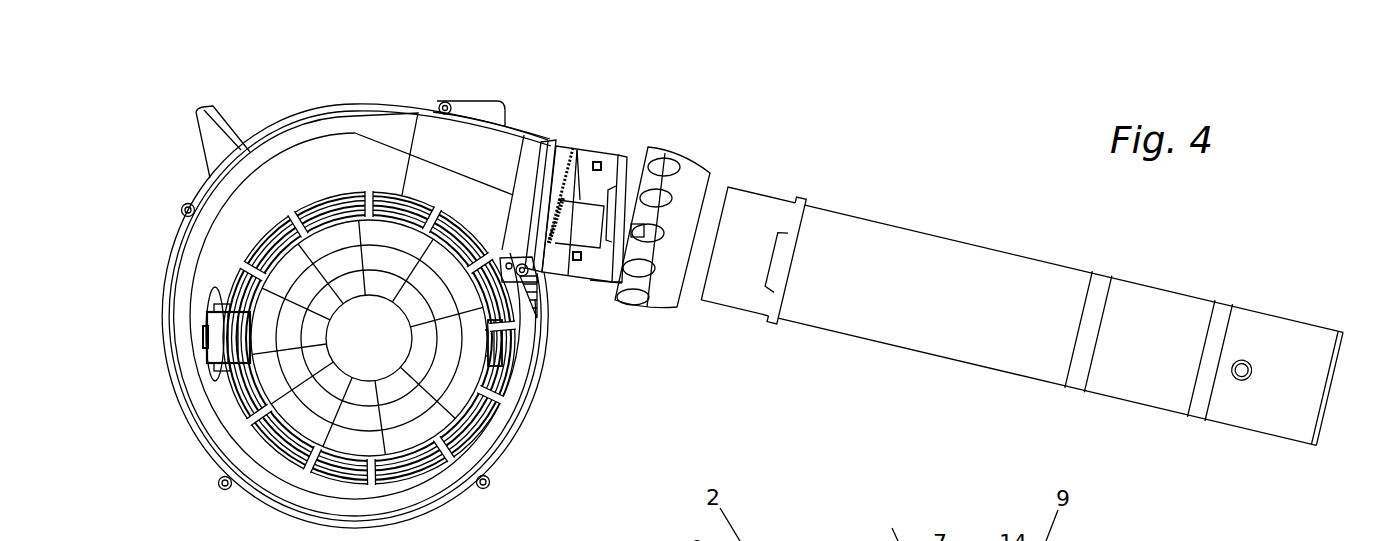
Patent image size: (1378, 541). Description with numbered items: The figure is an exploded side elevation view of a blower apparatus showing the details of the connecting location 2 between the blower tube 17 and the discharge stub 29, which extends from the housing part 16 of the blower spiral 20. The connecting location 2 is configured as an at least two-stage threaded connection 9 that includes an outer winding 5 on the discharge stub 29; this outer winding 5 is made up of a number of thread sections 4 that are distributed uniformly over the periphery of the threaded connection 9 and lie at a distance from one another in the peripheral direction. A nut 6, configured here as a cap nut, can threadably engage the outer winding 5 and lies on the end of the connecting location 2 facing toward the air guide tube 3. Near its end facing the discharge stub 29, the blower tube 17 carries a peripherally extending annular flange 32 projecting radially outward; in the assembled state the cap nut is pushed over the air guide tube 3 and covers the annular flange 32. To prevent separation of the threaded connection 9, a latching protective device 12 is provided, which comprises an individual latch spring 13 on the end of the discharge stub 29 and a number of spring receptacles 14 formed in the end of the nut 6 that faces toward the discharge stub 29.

The connecting location 2 is at (640, 145).
The air guide tube 3 is at (1072, 275).
The thread sections 4 is at (598, 162).
The outer winding 5 is at (597, 148).
The nut 6 is at (720, 228).
The threaded connection 9 is at (608, 287).
The latching protective device 12 is at (543, 197).
The latch spring 13 is at (557, 207).
The spring receptacles 14 is at (650, 150).
The housing part 16 is at (524, 133).
The blower tube 17 is at (945, 312).
The blower spiral 20 is at (490, 433).
The discharge stub 29 is at (560, 170).
The annular flange 32 is at (802, 212).